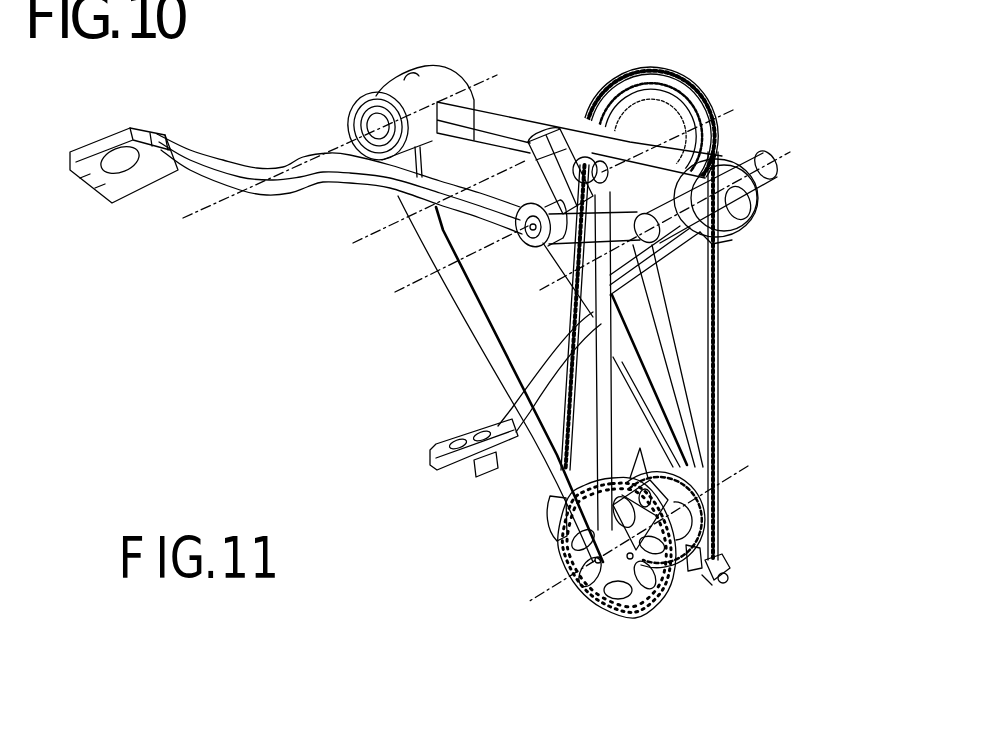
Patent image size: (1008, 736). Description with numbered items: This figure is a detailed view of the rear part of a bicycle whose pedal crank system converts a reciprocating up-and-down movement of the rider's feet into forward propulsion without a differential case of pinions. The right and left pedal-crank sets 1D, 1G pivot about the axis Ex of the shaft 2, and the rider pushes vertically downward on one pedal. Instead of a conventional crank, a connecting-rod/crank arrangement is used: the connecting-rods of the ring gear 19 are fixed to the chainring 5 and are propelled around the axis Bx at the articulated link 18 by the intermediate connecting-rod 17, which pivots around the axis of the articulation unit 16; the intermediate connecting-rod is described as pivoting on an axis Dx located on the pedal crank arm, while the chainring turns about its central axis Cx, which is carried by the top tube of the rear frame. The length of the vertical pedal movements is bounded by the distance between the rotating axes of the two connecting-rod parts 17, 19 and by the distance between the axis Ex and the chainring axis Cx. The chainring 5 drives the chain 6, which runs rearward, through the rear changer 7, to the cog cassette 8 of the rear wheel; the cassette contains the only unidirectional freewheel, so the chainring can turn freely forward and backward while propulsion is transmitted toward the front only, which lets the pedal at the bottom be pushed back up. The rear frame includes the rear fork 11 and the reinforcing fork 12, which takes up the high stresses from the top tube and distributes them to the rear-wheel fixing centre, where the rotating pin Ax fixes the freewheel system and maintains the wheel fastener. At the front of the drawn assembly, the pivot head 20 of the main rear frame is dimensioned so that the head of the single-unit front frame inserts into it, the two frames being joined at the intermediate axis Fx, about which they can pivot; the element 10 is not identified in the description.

The left pedal-crank set 1G is at (218, 163).
The right pedal-crank set 1D is at (423, 463).
The shaft 2 is at (690, 232).
The chainring 5 is at (641, 80).
The chain 6 is at (717, 343).
The rear changer 7 is at (701, 552).
The cog cassette 8 is at (692, 533).
The brake caliper 10 is at (648, 492).
The rear fork 11 is at (517, 385).
The reinforcing fork 12 is at (655, 307).
The articulation unit 16 is at (529, 238).
The intermediate connecting-rod 17 is at (546, 182).
The articulated link 18 is at (553, 162).
The connecting-rods of the ring gear 19 is at (567, 178).
The pivot head 20 is at (432, 84).
The rotating pin Ax is at (653, 526).
The articulation axis Bx is at (421, 212).
The central axis of the chainring Cx is at (684, 132).
The pivot axis of the intermediate connecting-rod Dx is at (444, 269).
The central axis of the pedal-crank arms Ex is at (649, 232).
The intermediate axis Fx is at (324, 158).